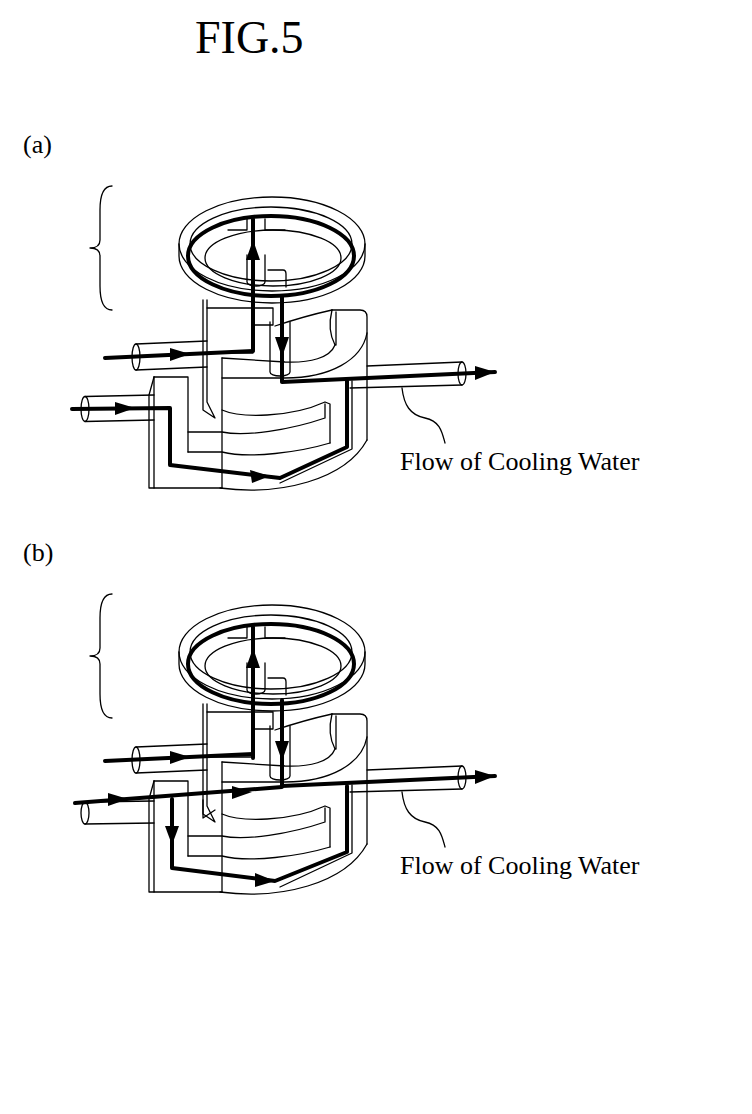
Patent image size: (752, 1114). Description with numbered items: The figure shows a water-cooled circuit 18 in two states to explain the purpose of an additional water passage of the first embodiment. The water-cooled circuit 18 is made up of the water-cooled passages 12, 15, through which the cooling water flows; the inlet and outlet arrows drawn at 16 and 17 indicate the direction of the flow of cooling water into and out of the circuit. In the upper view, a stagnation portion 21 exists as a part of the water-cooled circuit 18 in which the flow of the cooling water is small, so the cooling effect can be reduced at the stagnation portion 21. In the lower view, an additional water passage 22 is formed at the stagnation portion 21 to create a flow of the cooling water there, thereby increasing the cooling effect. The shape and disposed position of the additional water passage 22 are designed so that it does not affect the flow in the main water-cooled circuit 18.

The water-cooled passage 12 is at (192, 236).
The water-cooled passage 15 is at (219, 333).
The cooling water inlet pipe 16 is at (152, 343).
The cooling water outlet pipe 17 is at (440, 366).
The water-cooled circuit 18 is at (84, 452).
The stagnation portion 21 is at (243, 395).
The additional water passage 22 is at (213, 800).